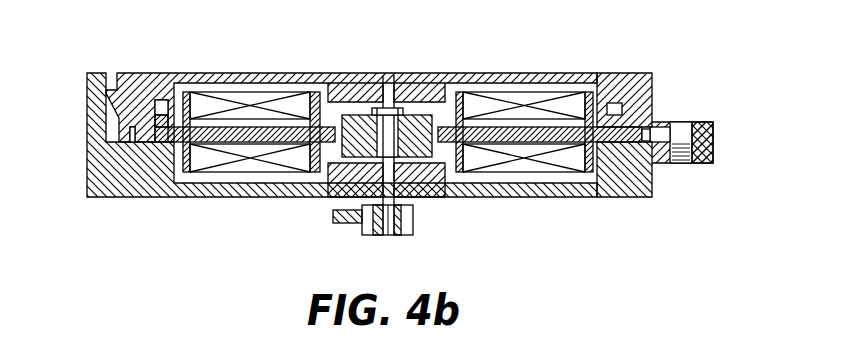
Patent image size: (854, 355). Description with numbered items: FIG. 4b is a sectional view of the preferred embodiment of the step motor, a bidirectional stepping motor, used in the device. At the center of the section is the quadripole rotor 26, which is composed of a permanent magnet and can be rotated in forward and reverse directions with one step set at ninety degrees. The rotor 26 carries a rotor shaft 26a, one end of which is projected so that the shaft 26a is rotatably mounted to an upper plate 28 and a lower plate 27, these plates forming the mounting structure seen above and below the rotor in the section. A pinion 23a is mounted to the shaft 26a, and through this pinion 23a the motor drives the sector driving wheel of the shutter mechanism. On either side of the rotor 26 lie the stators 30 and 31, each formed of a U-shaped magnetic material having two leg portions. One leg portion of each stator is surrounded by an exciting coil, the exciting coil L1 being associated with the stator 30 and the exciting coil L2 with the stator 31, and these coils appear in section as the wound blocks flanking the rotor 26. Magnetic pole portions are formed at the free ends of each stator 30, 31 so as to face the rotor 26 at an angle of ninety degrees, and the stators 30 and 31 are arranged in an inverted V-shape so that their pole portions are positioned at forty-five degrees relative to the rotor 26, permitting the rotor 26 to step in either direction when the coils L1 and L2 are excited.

The exciting coil L1 is at (233, 96).
The exciting coil L2 is at (520, 100).
The quadripole rotor 26 is at (357, 116).
The rotor shaft 26a is at (403, 82).
The lower plate 27 is at (633, 80).
The upper plate 28 is at (635, 190).
The stator 30 is at (262, 137).
The stator 31 is at (517, 137).
The pinion 23a is at (405, 221).